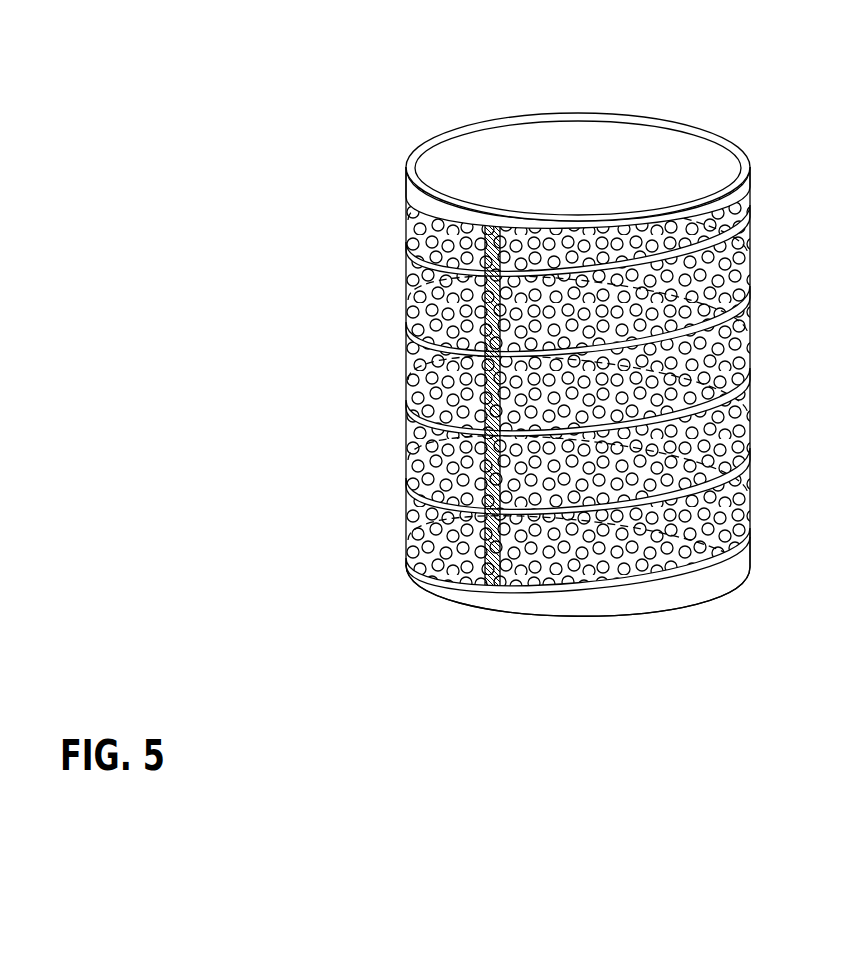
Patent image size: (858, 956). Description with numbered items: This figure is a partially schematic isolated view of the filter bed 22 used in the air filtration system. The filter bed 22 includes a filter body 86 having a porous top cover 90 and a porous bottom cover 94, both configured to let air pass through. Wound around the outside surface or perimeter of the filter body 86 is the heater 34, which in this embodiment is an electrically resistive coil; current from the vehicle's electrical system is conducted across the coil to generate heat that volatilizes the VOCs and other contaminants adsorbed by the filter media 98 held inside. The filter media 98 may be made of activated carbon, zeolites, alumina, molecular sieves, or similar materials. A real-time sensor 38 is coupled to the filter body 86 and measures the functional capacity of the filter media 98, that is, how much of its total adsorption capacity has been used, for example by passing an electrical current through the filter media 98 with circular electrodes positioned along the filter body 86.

The filter bed 22 is at (468, 76).
The heater 34 is at (750, 279).
The real-time sensor 38 is at (408, 271).
The filter body 86 is at (395, 452).
The porous top cover 90 is at (493, 163).
The porous bottom cover 94 is at (672, 604).
The filter media 98 is at (722, 420).